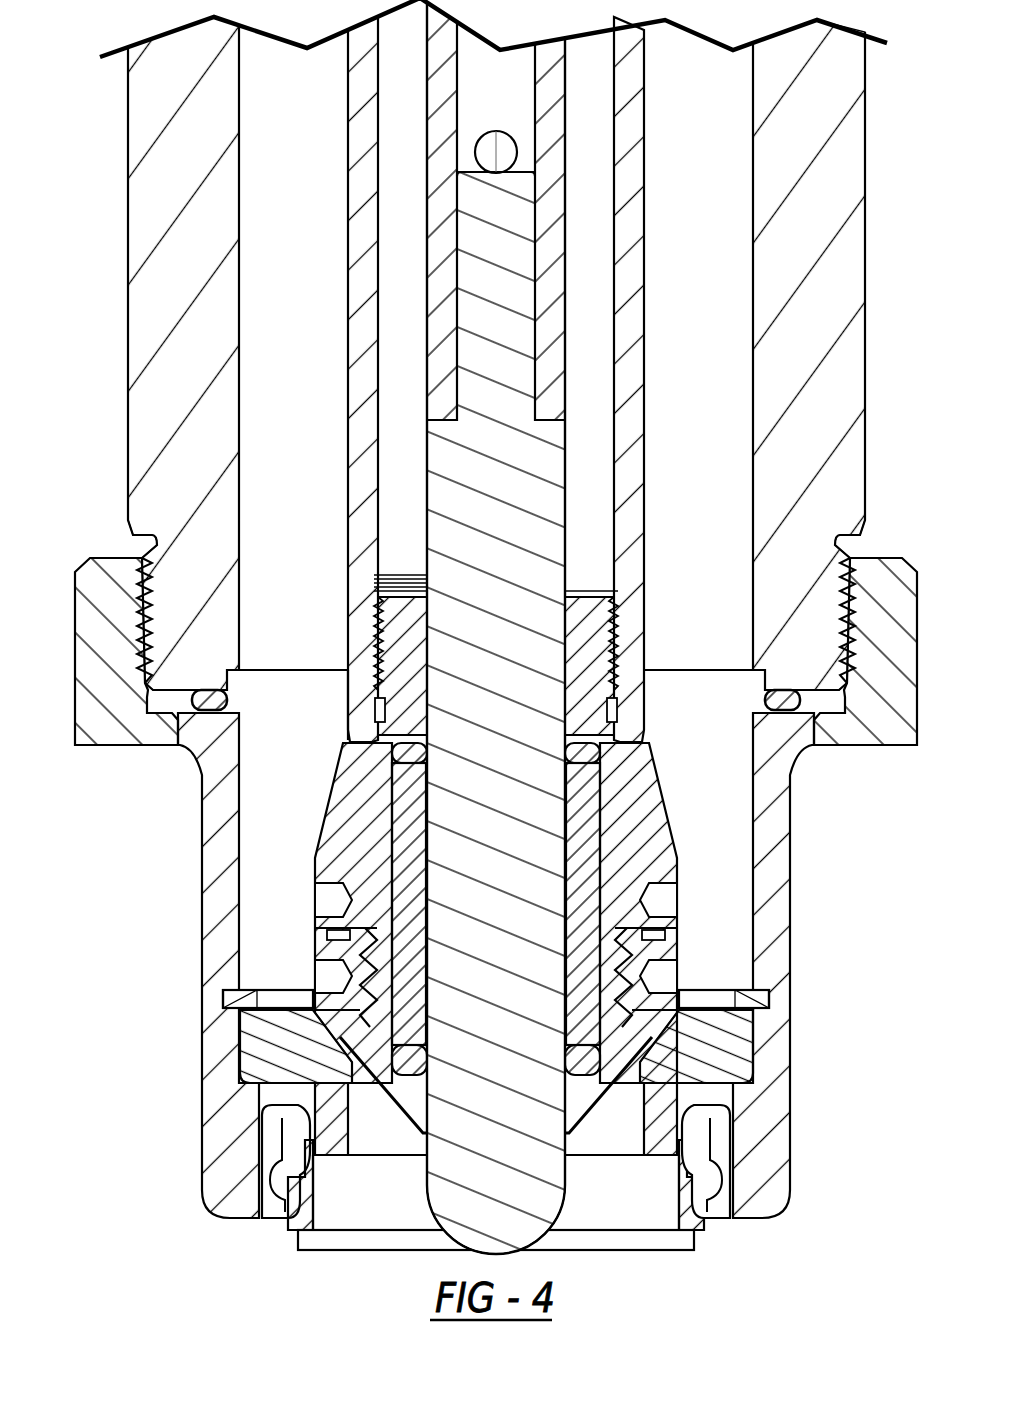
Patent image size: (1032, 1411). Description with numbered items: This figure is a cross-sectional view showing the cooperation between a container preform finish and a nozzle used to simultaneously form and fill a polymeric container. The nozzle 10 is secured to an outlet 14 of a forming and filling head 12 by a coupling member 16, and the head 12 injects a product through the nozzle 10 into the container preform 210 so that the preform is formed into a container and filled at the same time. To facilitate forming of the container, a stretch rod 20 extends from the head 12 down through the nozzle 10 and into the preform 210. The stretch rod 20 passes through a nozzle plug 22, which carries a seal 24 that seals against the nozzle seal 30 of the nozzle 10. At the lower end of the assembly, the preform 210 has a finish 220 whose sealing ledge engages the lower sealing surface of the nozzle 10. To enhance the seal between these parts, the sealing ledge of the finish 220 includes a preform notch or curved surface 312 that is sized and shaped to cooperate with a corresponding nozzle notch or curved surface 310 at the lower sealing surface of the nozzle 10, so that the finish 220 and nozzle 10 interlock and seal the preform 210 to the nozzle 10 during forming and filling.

The nozzle 10 is at (217, 820).
The forming and filling head 12 is at (150, 308).
The outlet 14 is at (287, 673).
The coupling member 16 is at (100, 633).
The stretch rod 20 is at (530, 478).
The nozzle plug 22 is at (343, 837).
The seal 24 is at (343, 1015).
The nozzle seal 30 is at (255, 1050).
The container preform 210 is at (385, 1247).
The finish 220 is at (293, 1218).
The nozzle notch or curved surface 310 is at (287, 1117).
The preform notch or curved surface 312 is at (293, 1178).